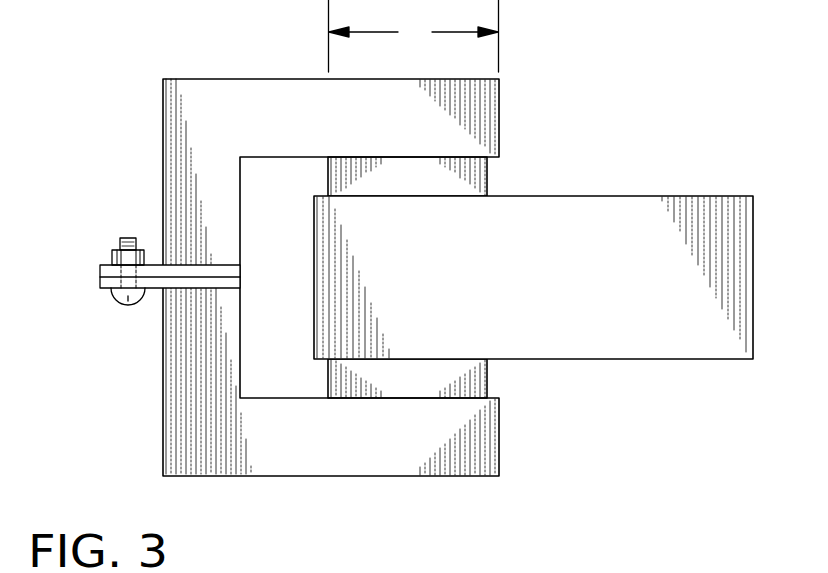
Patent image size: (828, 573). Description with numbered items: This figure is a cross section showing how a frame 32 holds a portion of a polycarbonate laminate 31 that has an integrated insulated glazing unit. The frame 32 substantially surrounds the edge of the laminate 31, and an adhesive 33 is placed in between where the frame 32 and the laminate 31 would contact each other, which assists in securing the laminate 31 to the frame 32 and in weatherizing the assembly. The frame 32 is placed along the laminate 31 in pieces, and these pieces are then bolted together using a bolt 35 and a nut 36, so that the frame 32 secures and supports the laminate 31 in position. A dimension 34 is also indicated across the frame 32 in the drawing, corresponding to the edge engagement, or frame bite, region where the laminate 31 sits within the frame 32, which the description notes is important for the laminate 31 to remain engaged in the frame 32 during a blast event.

The laminate 31 is at (696, 198).
The frame 32 is at (350, 467).
The adhesive 33 is at (487, 181).
The gap width 34 is at (427, 42).
The bolt 35 is at (116, 300).
The nut 36 is at (112, 252).